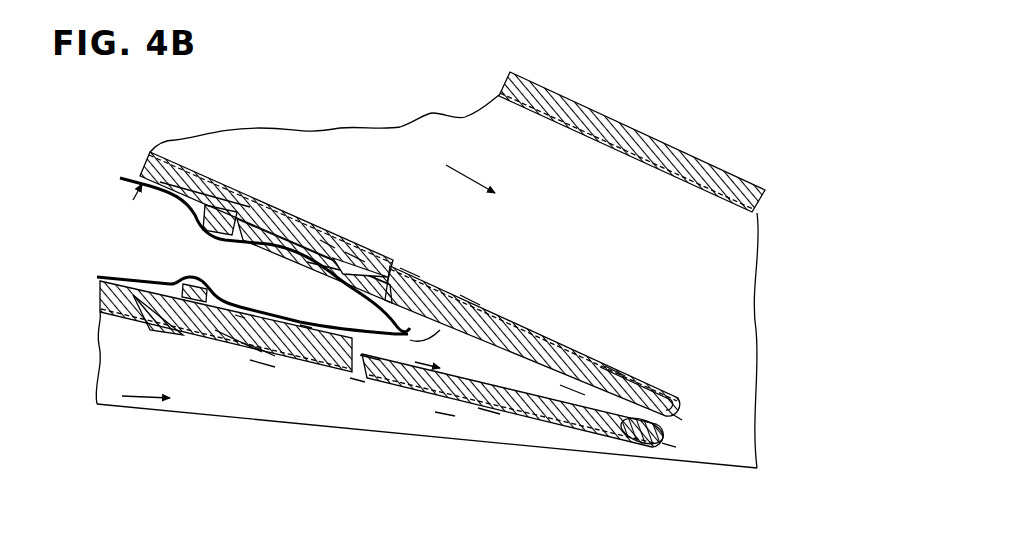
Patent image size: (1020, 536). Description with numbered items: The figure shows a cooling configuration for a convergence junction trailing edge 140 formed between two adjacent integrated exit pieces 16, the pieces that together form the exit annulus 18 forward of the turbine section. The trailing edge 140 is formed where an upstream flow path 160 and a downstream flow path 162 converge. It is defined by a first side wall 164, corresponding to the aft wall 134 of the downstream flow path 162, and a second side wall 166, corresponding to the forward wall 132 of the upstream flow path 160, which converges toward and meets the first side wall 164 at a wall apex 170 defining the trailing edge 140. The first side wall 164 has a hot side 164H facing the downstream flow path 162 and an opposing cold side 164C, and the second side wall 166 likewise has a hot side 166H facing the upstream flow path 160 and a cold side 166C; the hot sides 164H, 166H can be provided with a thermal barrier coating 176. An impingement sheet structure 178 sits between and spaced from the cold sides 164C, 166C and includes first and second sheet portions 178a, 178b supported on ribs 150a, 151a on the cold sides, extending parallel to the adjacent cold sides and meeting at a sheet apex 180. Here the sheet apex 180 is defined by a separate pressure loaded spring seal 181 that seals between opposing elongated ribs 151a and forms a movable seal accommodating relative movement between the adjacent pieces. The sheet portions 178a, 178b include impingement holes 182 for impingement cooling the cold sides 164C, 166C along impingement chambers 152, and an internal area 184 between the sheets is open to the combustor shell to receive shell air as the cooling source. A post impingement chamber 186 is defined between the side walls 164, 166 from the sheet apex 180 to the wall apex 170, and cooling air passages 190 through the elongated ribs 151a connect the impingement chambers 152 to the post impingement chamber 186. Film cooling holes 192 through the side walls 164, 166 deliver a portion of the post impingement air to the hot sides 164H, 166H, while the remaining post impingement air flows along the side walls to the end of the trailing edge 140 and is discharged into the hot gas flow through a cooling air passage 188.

The integrated exit piece 16 is at (326, 124).
The exit annulus 18 is at (443, 415).
The forward wall 132 is at (673, 140).
The aft wall 134 is at (350, 250).
The trailing edge 140 is at (677, 448).
The rib 150a is at (200, 226).
The elongated rib 151a is at (412, 272).
The impingement chamber 152 is at (255, 262).
The upstream flow path 160 is at (140, 405).
The downstream flow path 162 is at (470, 178).
The first side wall 164 is at (510, 312).
The cold side of first side wall 164C is at (330, 248).
The hot side of first side wall 164H is at (614, 370).
The second side wall 166 is at (260, 363).
The cold side of second side wall 166C is at (262, 350).
The hot side of second side wall 166H is at (487, 415).
The wall apex 170 is at (628, 437).
The thermal barrier coating 176 is at (545, 335).
The impingement sheet structure 178 is at (370, 265).
The first sheet portion 178a is at (297, 260).
The second sheet portion 178b is at (228, 338).
The sheet apex 180 is at (470, 300).
The spring seal 181 is at (428, 362).
The impingement holes 182 is at (307, 323).
The internal area 184 is at (240, 258).
The post impingement chamber 186 is at (572, 388).
The cooling air passage 188 is at (680, 417).
The cooling air passages 190 is at (445, 325).
The film cooling holes 192 is at (170, 165).